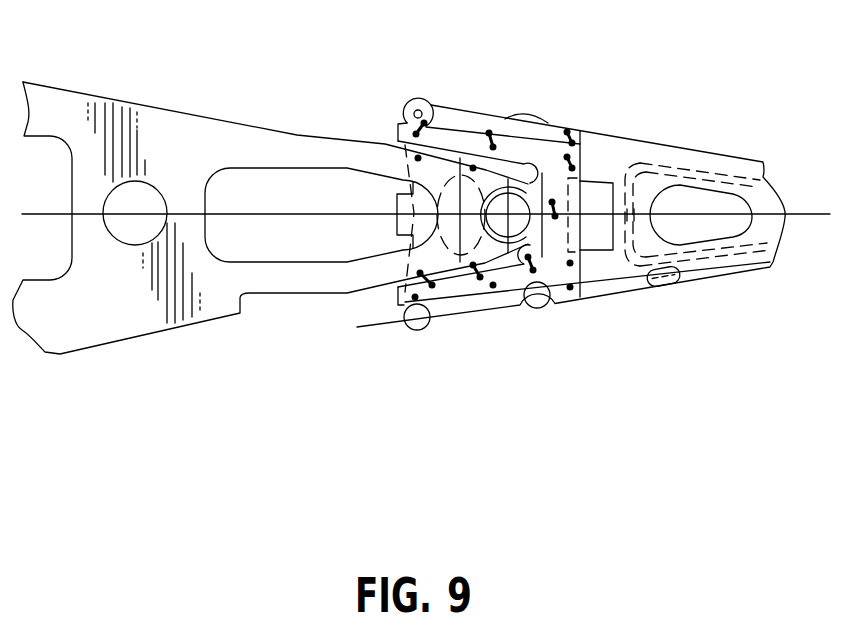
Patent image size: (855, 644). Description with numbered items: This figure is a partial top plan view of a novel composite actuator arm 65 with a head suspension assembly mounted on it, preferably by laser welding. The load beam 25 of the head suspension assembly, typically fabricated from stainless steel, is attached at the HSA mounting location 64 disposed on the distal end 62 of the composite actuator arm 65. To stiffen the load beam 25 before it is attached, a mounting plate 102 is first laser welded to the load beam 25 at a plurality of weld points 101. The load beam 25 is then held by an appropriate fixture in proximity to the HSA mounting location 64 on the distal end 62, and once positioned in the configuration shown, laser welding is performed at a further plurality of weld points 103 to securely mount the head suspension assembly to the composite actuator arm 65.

The load beam 25 is at (747, 161).
The distal end 62 is at (542, 240).
The HSA mounting location 64 is at (466, 232).
The composite actuator arm 65 is at (184, 163).
The weld points 101 is at (552, 202).
The mounting plate 102 is at (547, 286).
The weld points 103 is at (432, 285).